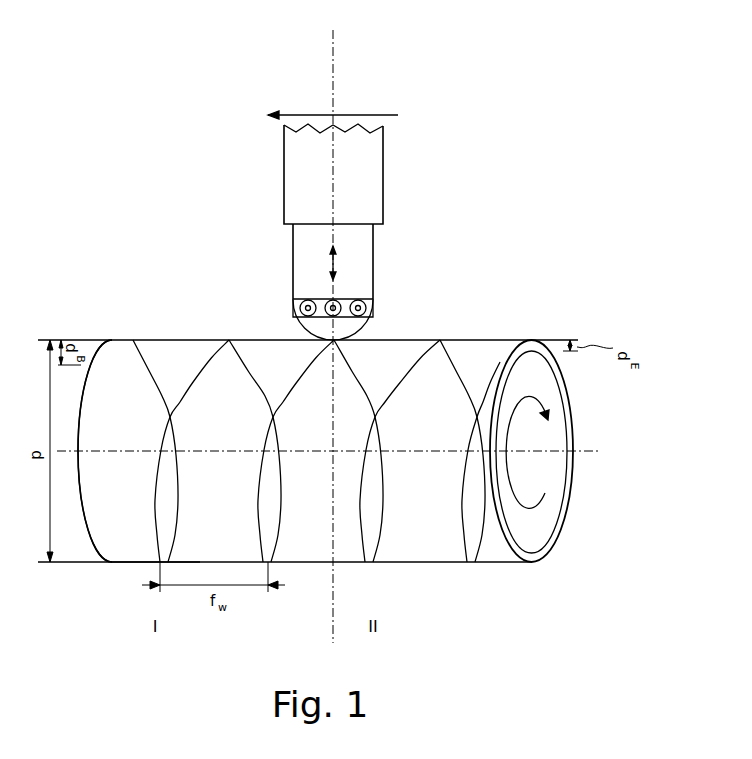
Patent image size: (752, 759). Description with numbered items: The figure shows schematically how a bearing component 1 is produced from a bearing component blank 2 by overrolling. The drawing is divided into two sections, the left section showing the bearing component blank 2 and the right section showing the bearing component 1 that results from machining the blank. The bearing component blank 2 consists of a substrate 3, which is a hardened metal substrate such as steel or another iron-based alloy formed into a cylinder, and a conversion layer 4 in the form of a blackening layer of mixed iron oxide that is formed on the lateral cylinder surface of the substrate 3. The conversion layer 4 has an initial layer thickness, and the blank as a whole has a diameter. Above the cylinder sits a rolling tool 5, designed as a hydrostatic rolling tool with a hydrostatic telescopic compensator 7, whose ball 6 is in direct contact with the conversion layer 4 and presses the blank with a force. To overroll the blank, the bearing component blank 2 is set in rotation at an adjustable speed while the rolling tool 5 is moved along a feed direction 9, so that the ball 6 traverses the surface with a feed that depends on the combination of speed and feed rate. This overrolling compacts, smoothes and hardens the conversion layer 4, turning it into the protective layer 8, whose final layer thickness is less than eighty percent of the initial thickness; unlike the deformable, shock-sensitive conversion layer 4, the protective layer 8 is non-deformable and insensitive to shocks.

The bearing component 1 is at (430, 545).
The bearing component blank 2 is at (130, 563).
The substrate 3 is at (553, 470).
The conversion layer 4 is at (165, 358).
The rolling tool 5 is at (403, 178).
The ball 6 is at (338, 334).
The hydrostatic telescopic compensator 7 is at (355, 253).
The protective layer 8 is at (480, 358).
The feed direction 9 is at (365, 115).